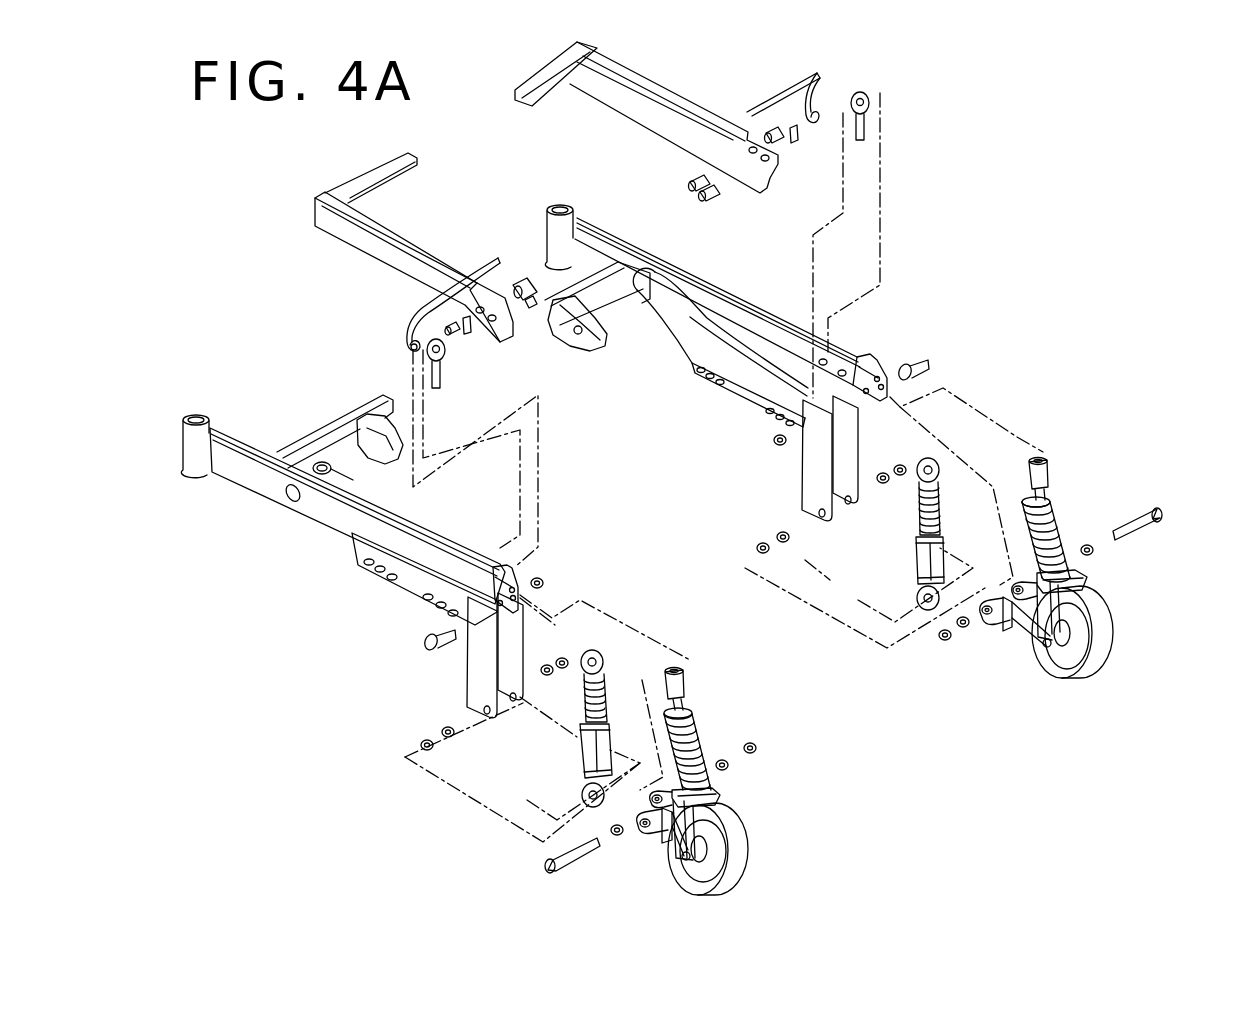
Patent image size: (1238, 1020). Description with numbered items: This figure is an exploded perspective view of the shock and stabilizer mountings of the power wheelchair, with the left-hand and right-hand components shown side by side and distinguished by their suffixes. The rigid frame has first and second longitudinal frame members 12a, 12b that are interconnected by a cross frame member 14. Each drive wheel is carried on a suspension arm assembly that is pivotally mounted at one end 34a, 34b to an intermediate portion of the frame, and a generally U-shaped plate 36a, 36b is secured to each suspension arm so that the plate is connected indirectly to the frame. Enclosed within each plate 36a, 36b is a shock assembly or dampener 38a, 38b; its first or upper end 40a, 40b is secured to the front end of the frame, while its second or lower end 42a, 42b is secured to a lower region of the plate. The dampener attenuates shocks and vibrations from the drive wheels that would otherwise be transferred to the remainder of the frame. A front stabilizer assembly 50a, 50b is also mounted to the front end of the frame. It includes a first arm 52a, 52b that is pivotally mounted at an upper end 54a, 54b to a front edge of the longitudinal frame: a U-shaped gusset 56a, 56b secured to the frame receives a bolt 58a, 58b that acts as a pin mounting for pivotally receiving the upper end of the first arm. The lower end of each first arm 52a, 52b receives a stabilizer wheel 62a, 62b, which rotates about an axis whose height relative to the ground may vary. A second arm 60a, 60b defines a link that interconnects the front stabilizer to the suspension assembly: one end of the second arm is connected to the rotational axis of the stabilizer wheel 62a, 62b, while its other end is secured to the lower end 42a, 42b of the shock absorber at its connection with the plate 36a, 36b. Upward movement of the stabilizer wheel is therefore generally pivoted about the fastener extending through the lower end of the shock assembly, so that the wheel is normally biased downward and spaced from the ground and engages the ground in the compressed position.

The first longitudinal frame member 12a is at (253, 478).
The second longitudinal frame member 12b is at (608, 233).
The cross frame member 14 is at (340, 427).
The suspension arm pivot end 34a is at (287, 502).
The suspension arm pivot end 34b is at (652, 308).
The U-shaped plate 36a is at (477, 668).
The U-shaped plate 36b is at (815, 458).
The shock assembly 38a is at (569, 709).
The shock assembly 38b is at (937, 531).
The upper end of shock assembly 40a is at (595, 655).
The upper end of shock assembly 40b is at (940, 460).
The lower end of shock assembly 42a is at (583, 800).
The lower end of shock assembly 42b is at (926, 610).
The front stabilizer assembly 50a is at (698, 758).
The front stabilizer assembly 50b is at (1068, 562).
The first arm 52a is at (701, 716).
The first arm 52b is at (1070, 527).
The upper end of first arm 54a is at (675, 666).
The upper end of first arm 54b is at (1042, 457).
The U-shaped gusset 56a is at (520, 580).
The U-shaped gusset 56b is at (877, 358).
The bolt 58a is at (423, 643).
The bolt 58b is at (925, 366).
The second arm 60a is at (657, 840).
The second arm 60b is at (1058, 663).
The stabilizer wheel 62a is at (735, 842).
The stabilizer wheel 62b is at (1100, 632).